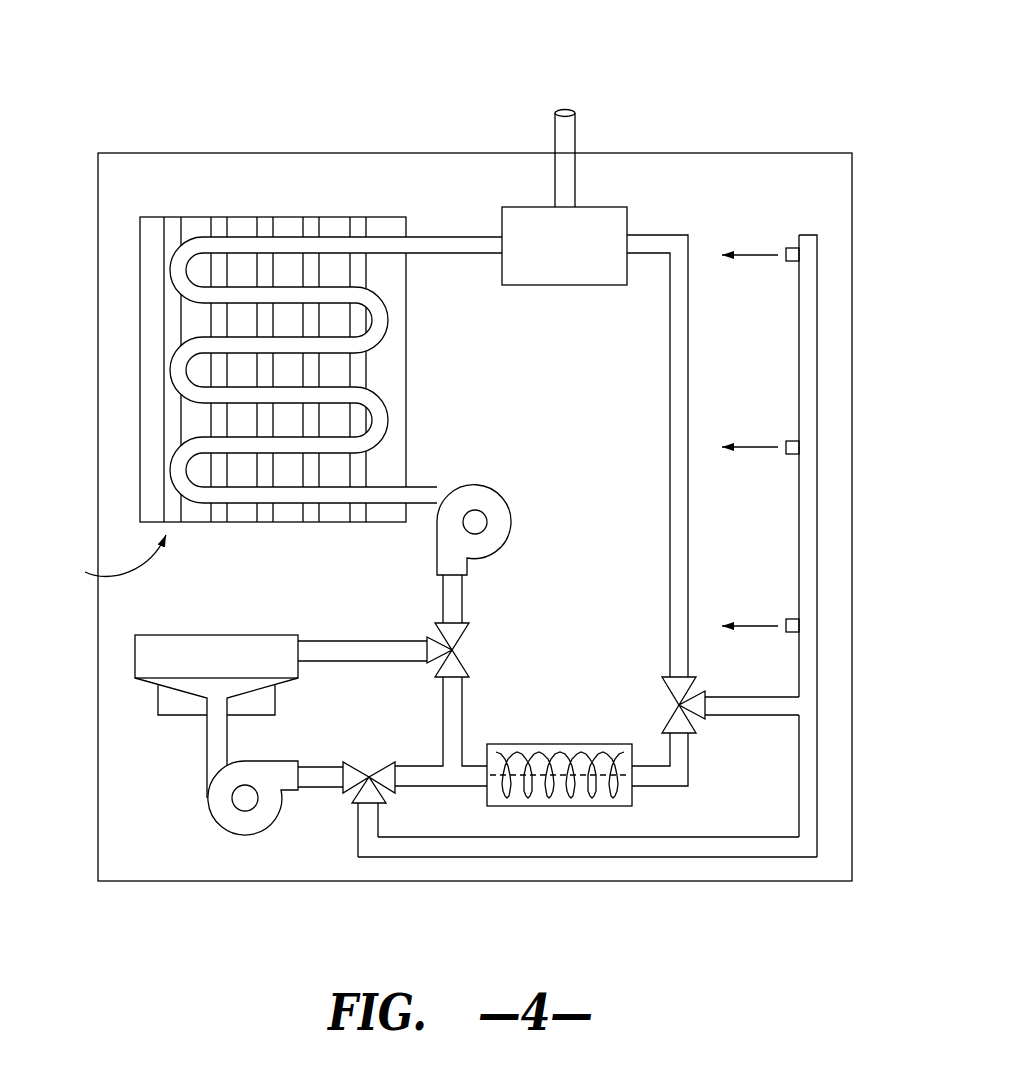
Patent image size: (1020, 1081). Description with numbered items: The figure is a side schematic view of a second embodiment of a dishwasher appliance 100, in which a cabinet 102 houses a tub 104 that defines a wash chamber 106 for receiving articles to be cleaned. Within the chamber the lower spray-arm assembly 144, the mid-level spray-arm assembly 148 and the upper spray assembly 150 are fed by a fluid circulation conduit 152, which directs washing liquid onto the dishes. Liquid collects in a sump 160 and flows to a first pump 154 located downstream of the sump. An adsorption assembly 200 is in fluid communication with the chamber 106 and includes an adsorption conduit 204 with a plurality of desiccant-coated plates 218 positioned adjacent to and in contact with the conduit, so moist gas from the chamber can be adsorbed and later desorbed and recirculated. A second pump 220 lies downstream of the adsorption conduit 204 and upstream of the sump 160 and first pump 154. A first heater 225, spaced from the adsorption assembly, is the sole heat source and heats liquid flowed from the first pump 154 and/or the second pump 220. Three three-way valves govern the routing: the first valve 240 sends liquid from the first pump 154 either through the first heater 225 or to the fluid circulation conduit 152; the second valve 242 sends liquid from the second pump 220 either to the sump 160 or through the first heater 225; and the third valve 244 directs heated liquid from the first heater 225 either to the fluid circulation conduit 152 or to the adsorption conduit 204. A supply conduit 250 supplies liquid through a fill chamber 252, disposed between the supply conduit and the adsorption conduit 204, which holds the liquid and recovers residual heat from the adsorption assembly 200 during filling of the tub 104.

The dishwasher appliance 100 is at (206, 82).
The cabinet 102 is at (420, 153).
The tub 104 is at (295, 590).
The wash chamber 106 is at (99, 558).
The lower spray-arm assembly 144 is at (793, 618).
The mid-level spray-arm assembly 148 is at (794, 440).
The upper spray assembly 150 is at (792, 247).
The fluid circulation conduit 152 is at (807, 658).
The first pump 154 is at (233, 817).
The sump 160 is at (238, 676).
The adsorption assembly 200 is at (128, 263).
The adsorption conduit 204 is at (290, 238).
The desiccant-coated plates 218 is at (220, 226).
The second pump 220 is at (493, 508).
The first heater 225 is at (573, 807).
The first valve 240 is at (366, 758).
The second valve 242 is at (470, 637).
The third valve 244 is at (658, 694).
The supply conduit 250 is at (578, 132).
The fill chamber 252 is at (588, 260).